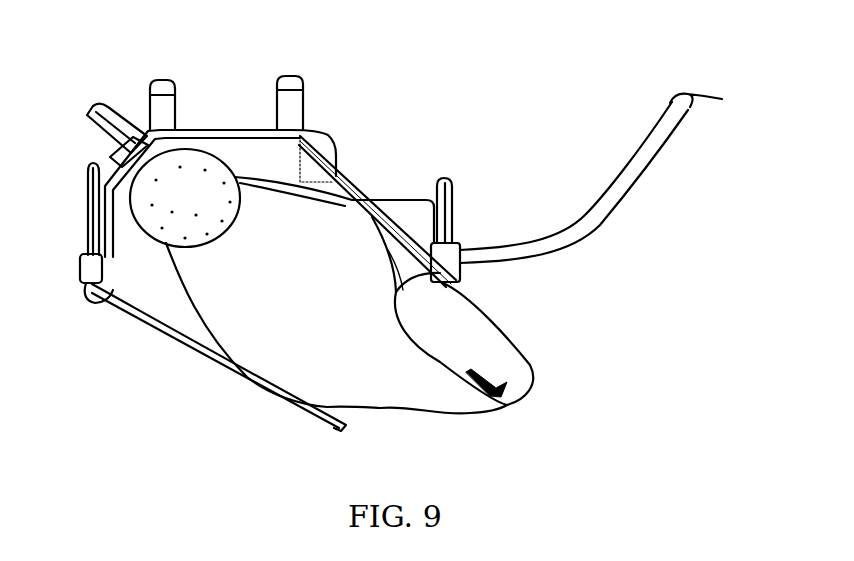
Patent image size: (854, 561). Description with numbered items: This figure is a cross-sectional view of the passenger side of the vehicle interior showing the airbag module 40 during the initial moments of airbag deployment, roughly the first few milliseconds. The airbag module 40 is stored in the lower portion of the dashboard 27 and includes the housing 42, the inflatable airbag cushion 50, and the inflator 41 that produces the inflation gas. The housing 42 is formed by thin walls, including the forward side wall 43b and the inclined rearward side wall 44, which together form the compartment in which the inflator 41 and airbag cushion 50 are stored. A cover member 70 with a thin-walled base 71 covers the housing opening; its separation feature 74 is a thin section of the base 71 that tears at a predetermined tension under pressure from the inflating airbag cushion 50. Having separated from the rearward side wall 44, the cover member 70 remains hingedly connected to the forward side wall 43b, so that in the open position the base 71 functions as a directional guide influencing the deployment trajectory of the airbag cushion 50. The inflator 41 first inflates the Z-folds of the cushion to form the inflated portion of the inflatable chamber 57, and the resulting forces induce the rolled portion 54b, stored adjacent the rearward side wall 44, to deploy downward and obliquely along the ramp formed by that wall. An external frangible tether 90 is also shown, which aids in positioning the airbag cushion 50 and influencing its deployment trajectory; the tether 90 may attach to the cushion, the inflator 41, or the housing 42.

The airbag module 40 is at (468, 72).
The housing 42 is at (213, 128).
The tether 90 is at (308, 132).
The rearward side wall 44 is at (351, 170).
The dashboard 27 is at (637, 173).
The inflator 41 is at (186, 194).
The forward side wall 43b is at (117, 253).
The base 71 is at (148, 328).
The cover member 70 is at (227, 373).
The separation feature 74 is at (341, 429).
The inflatable chamber 57 is at (313, 317).
The rolled portion 54b is at (483, 344).
The airbag cushion 50 is at (500, 417).